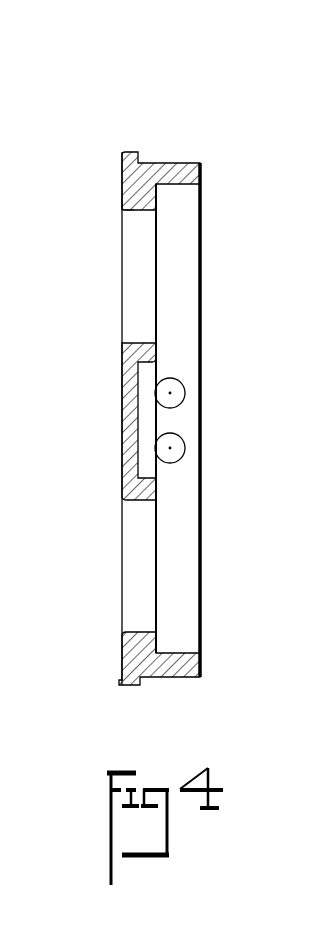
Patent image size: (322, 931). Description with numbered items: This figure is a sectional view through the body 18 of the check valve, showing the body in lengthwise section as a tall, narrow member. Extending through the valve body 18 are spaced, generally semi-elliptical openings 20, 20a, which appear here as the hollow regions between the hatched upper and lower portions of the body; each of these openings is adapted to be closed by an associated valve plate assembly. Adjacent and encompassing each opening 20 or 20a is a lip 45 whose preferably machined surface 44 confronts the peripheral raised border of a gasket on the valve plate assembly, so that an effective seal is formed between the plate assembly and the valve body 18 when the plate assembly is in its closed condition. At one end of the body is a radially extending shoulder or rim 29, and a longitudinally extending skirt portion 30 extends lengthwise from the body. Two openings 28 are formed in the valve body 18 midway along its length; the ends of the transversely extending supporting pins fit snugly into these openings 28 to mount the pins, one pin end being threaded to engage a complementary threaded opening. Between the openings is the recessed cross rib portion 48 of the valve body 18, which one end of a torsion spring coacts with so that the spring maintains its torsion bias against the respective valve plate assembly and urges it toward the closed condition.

The valve body 18 is at (202, 293).
The opening 20 is at (150, 210).
The opening 20a is at (142, 632).
The openings 28 is at (174, 440).
The shoulder or rim 29 is at (140, 152).
The skirt portion 30 is at (173, 677).
The machined surface 44 is at (158, 203).
The lip 45 is at (125, 208).
The recessed cross rib portion 48 is at (122, 462).